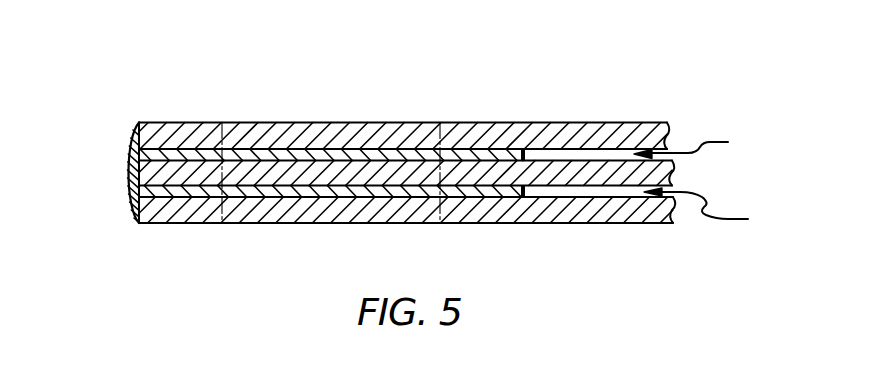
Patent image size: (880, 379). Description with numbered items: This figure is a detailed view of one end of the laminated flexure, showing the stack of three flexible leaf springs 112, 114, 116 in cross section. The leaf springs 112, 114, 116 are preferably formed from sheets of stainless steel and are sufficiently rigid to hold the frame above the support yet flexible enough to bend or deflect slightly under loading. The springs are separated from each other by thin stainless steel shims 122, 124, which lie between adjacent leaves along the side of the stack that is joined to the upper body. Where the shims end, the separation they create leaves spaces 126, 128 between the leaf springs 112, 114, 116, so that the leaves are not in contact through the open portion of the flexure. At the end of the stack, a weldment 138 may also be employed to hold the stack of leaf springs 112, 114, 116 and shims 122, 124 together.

The leaf spring 112 is at (582, 133).
The leaf spring 114 is at (668, 177).
The leaf spring 116 is at (574, 211).
The shim 122 is at (208, 157).
The shim 124 is at (298, 190).
The space 126 is at (724, 142).
The space 128 is at (744, 220).
The weldment 138 is at (128, 170).